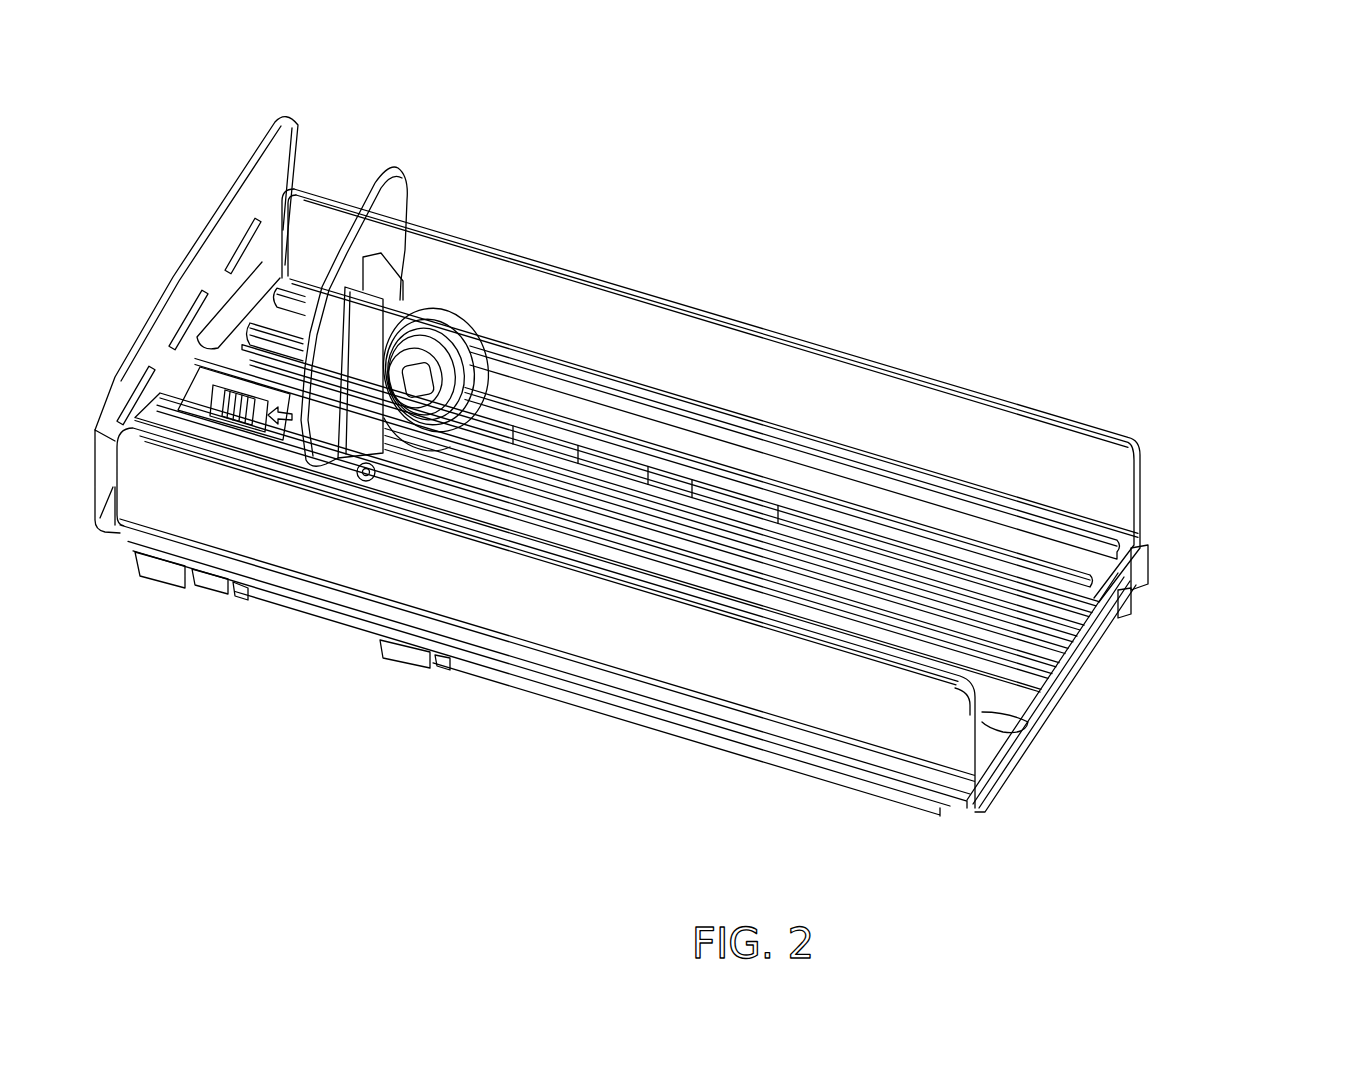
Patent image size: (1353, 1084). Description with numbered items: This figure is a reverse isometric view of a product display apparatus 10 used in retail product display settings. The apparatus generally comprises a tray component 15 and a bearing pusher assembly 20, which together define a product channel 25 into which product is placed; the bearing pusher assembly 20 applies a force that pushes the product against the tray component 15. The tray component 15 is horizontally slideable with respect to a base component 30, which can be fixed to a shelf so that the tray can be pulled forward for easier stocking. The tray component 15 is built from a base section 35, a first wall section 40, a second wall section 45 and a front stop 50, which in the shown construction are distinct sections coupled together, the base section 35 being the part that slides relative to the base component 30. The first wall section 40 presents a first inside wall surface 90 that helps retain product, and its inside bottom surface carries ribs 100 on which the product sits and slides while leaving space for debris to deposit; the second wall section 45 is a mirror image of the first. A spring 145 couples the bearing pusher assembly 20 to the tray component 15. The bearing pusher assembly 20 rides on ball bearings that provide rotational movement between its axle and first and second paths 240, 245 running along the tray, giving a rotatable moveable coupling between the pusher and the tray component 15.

The product display apparatus 10 is at (220, 717).
The tray component 15 is at (1145, 552).
The bearing pusher assembly 20 is at (403, 170).
The product channel 25 is at (310, 217).
The base component 30 is at (496, 673).
The base section 35 is at (1073, 657).
The first wall section 40 is at (1007, 400).
The second wall section 45 is at (940, 752).
The front stop 50 is at (263, 137).
The first inside wall surface 90 is at (873, 397).
The ribs 100 is at (1045, 550).
The spring 145 is at (440, 330).
The first path 240 is at (597, 490).
The second path 245 is at (458, 515).